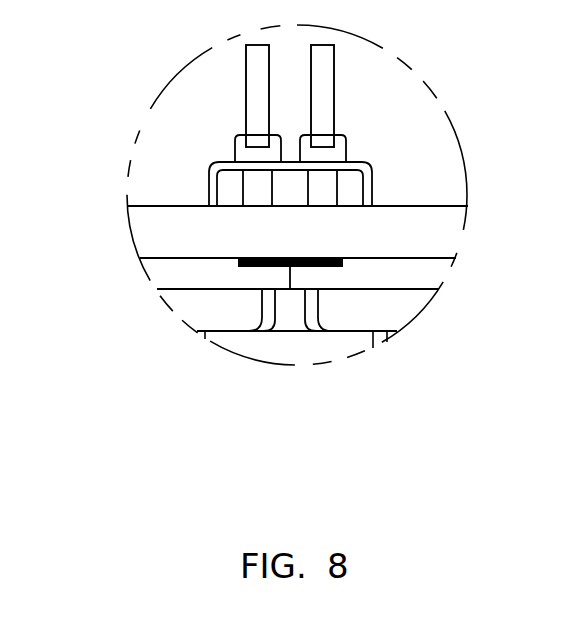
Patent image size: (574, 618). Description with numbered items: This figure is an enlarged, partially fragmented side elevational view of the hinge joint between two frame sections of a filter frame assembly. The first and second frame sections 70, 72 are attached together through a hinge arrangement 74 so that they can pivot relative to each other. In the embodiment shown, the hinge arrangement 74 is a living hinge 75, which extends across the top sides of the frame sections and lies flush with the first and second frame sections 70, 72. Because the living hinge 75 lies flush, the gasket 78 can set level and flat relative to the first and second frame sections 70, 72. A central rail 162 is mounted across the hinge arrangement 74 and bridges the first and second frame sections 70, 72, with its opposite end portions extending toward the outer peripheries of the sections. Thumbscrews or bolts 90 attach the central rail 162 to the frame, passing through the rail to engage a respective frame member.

The thumbscrews or bolts 90 is at (263, 89).
The central rail 162 is at (213, 172).
The gasket 78 is at (158, 227).
The living hinge 75 is at (346, 260).
The first frame section 70 is at (187, 278).
The second frame section 72 is at (407, 278).
The hinge arrangement 74 is at (290, 340).